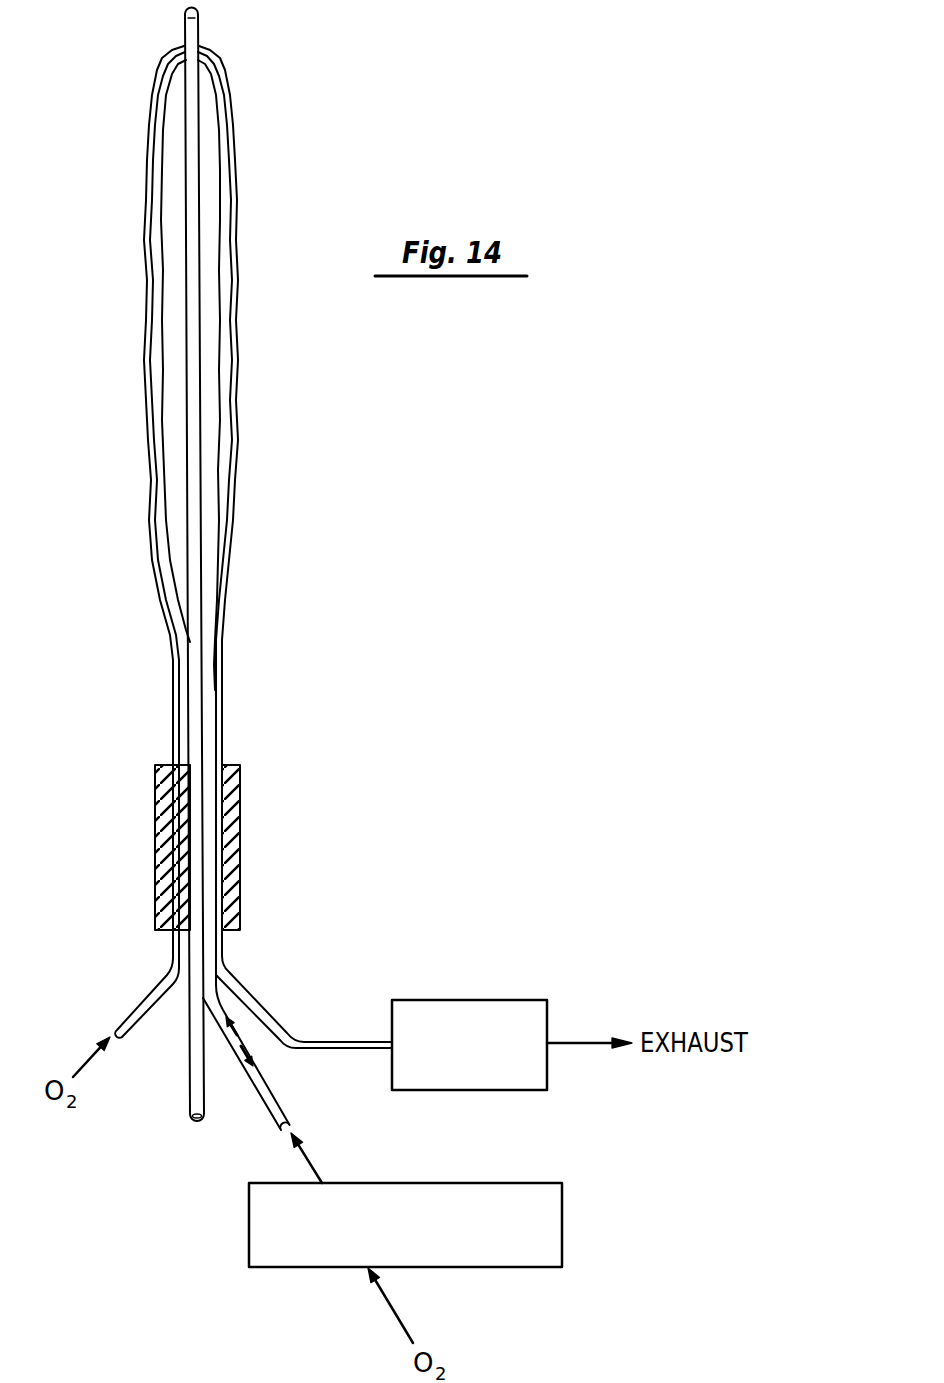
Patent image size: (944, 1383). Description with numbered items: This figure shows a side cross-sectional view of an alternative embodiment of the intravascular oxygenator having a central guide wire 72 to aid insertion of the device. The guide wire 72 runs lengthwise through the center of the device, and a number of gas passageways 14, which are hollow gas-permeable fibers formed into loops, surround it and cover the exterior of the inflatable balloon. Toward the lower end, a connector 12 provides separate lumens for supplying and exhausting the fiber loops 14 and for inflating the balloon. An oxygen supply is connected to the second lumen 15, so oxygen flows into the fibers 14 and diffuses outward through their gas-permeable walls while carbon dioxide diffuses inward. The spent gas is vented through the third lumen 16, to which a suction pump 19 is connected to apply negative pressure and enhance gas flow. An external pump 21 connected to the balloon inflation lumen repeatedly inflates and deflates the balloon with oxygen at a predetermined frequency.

The central guide wire 72 is at (199, 18).
The gas passageways 14 is at (147, 162).
The connector 12 is at (155, 822).
The second lumen 15 is at (148, 989).
The third lumen 16 is at (257, 1004).
The suction pump 19 is at (476, 1000).
The external pump 21 is at (437, 1183).